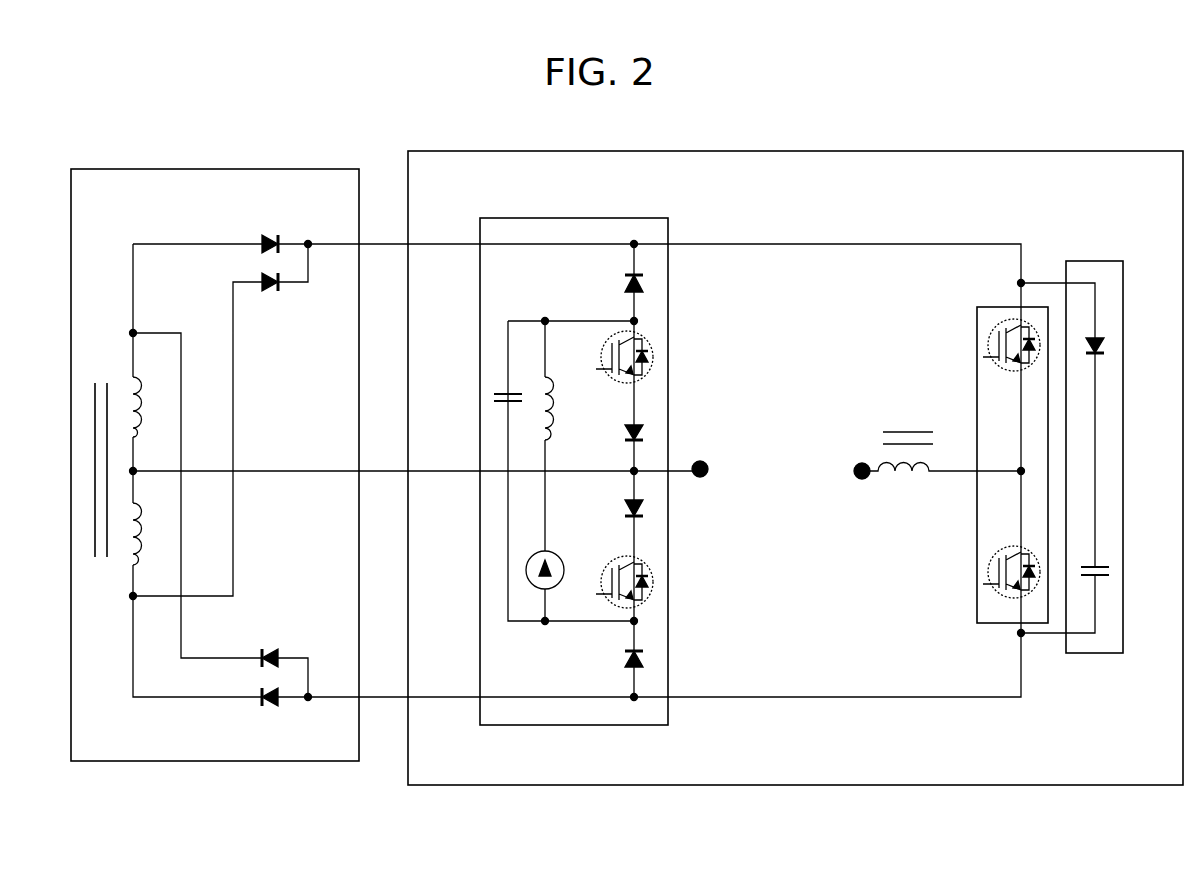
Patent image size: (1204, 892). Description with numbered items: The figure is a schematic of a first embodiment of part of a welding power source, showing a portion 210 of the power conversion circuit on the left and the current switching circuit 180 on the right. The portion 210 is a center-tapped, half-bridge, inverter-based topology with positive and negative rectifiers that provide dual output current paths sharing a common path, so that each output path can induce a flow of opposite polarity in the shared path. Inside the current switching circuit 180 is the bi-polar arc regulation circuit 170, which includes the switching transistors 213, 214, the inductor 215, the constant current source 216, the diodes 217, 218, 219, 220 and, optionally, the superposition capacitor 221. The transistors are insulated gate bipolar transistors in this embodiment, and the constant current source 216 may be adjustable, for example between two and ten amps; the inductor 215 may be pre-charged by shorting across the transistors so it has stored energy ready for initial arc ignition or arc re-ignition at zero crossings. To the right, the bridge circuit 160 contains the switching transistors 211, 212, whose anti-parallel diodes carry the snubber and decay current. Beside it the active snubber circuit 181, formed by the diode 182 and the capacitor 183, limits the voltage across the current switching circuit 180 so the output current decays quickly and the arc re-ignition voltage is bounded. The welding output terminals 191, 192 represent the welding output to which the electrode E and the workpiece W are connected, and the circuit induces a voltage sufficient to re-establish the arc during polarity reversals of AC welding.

The portion of the power conversion circuit 210 is at (100, 172).
The current switching circuit 180 is at (862, 151).
The bi-polar arc regulation circuit 170 is at (521, 218).
The superposition capacitor 221 is at (506, 392).
The inductor 215 is at (554, 405).
The constant current source 216 is at (541, 551).
The diode 217 is at (634, 277).
The switching transistor 213 is at (646, 337).
The diode 218 is at (640, 426).
The diode 219 is at (634, 503).
The switching transistor 214 is at (648, 565).
The diode 220 is at (634, 652).
The welding output terminal 192 is at (708, 466).
The welding output terminal 191 is at (862, 462).
The bridge circuit 160 is at (993, 307).
The switching transistor 211 is at (1000, 328).
The switching transistor 212 is at (1008, 549).
The active snubber circuit 181 is at (1108, 261).
The diode 182 is at (1097, 338).
The capacitor 183 is at (1100, 567).